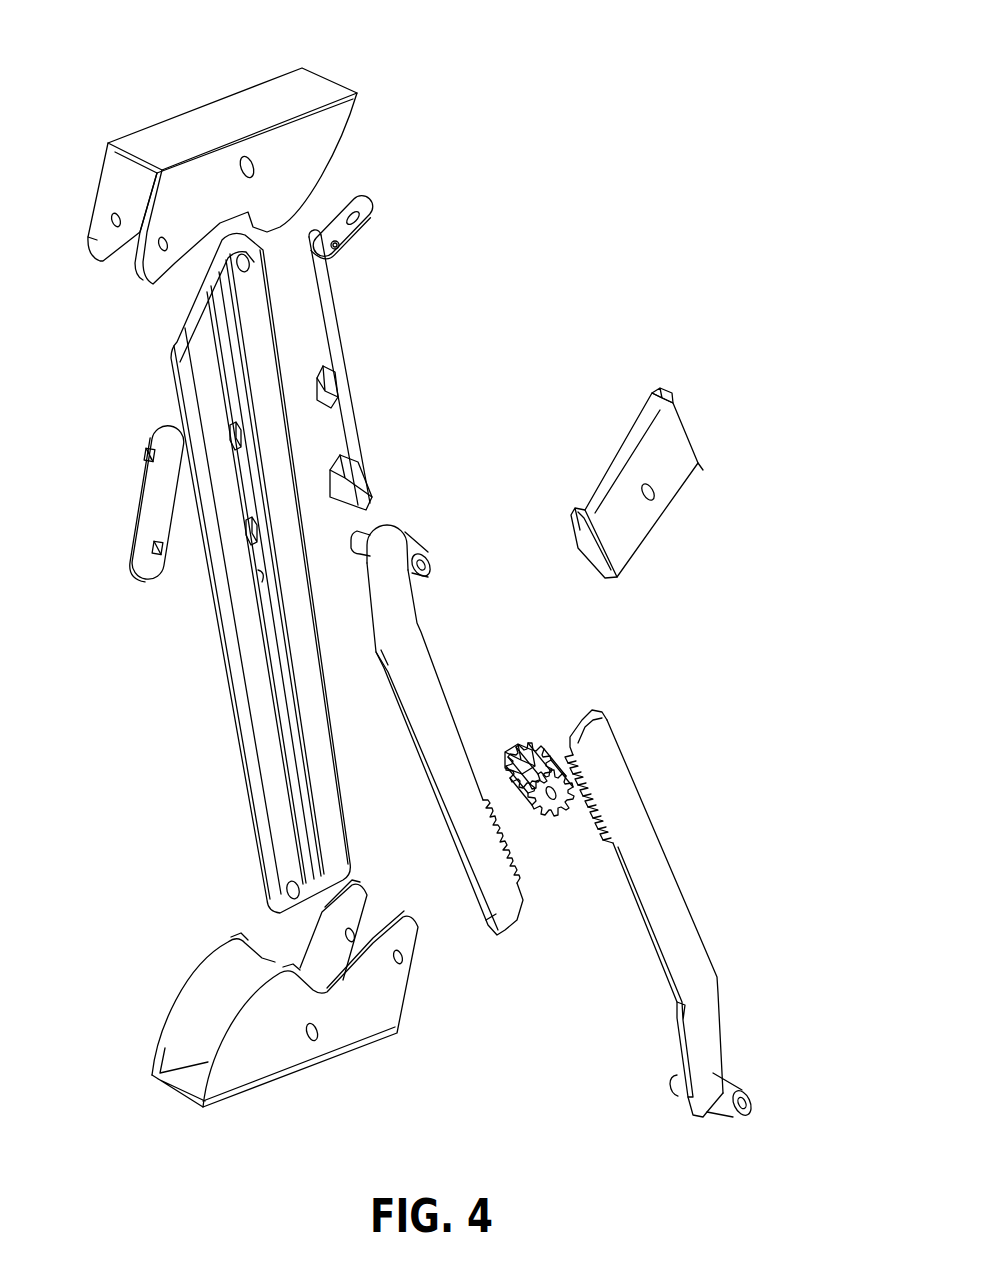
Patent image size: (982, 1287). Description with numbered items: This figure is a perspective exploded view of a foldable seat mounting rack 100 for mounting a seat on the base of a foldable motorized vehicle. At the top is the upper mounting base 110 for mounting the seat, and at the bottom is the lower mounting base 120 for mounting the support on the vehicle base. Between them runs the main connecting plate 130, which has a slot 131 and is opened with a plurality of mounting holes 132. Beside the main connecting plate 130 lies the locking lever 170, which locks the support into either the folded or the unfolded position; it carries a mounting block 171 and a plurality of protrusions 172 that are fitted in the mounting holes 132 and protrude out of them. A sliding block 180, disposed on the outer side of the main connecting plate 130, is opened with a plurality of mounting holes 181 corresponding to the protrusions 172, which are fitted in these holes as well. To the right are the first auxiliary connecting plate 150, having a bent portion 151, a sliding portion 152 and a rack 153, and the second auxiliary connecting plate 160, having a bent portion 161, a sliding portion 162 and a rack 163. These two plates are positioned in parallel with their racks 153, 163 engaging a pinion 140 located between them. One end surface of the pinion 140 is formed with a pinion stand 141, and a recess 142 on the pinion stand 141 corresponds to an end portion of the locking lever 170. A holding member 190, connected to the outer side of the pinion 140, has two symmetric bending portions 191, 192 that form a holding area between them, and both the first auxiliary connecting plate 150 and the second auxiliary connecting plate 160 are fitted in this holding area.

The foldable seat mounting rack 100 is at (82, 33).
The upper mounting base 110 is at (312, 137).
The lower mounting base 120 is at (358, 1012).
The main connecting plate 130 is at (193, 573).
The slot 131 is at (268, 648).
The mounting holes 132 is at (232, 432).
The pinion 140 is at (566, 784).
The pinion stand 141 is at (588, 702).
The recess 142 is at (517, 748).
The first auxiliary connecting plate 150 is at (705, 911).
The bent portion 151 is at (718, 1054).
The sliding portion 152 is at (665, 905).
The rack 153 is at (614, 826).
The second auxiliary connecting plate 160 is at (454, 776).
The bent portion 161 is at (395, 598).
The sliding portion 162 is at (450, 783).
The rack 163 is at (517, 865).
The locking lever 170 is at (333, 315).
The mounting block 171 is at (356, 212).
The protrusions 172 is at (335, 387).
The sliding block 180 is at (111, 506).
The mounting holes 181 is at (144, 457).
The holding member 190 is at (672, 474).
The bending portion 191 is at (668, 400).
The bending portion 192 is at (600, 515).